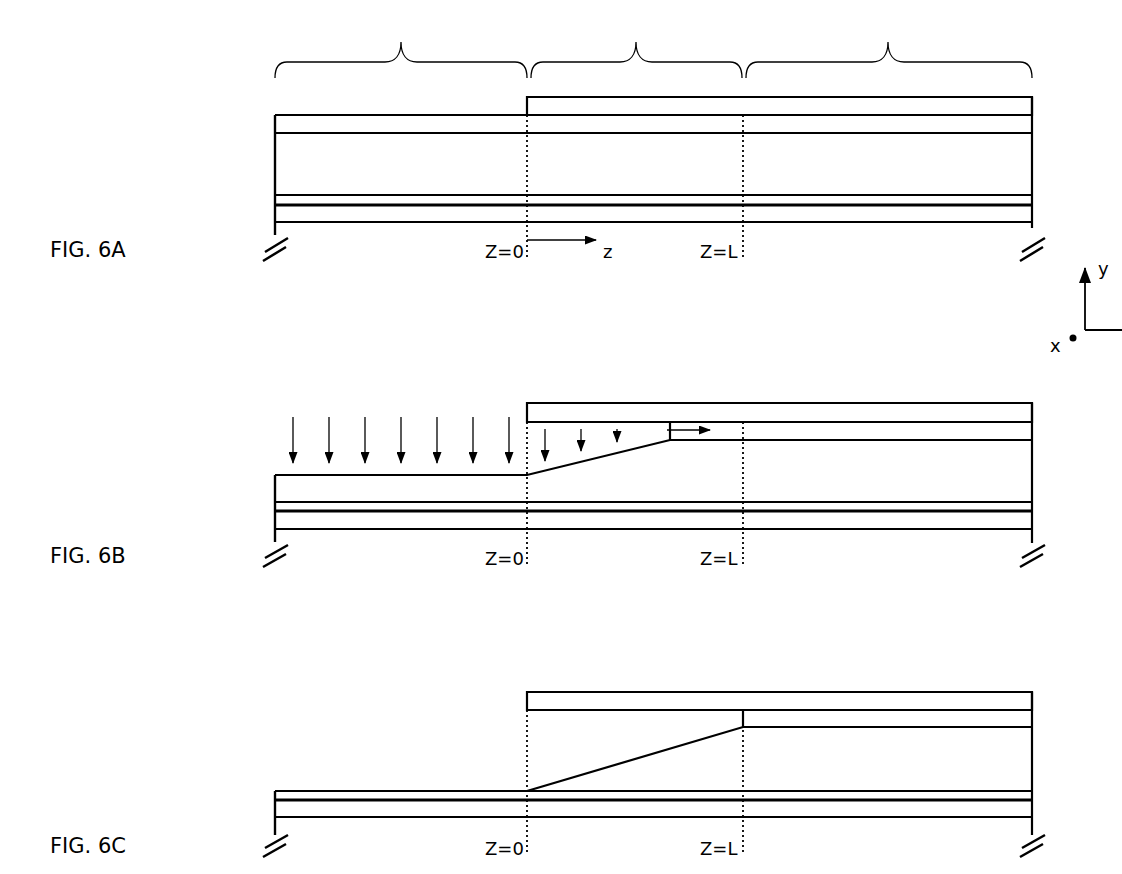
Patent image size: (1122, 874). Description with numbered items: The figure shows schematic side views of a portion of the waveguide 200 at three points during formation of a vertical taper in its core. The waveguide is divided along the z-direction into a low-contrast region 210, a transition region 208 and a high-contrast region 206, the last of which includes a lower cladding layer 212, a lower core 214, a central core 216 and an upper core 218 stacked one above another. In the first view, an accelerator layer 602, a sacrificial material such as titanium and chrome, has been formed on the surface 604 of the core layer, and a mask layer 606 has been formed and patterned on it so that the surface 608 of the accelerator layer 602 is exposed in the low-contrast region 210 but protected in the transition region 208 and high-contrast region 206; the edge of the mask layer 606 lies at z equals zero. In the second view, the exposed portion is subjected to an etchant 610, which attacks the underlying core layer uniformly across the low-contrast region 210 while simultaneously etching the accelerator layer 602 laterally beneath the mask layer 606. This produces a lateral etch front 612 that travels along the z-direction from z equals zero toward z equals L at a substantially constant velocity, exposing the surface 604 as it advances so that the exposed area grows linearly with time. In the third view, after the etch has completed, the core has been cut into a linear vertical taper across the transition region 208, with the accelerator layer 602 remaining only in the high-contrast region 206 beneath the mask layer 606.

In FIG. 6A, the waveguide 200 is at (180, 113).
In FIG. 6B, the waveguide 200 is at (180, 419).
In FIG. 6C, the waveguide 200 is at (180, 708).
In FIG. 6A, the high-contrast region 206 is at (889, 46).
In FIG. 6A, the transition region 208 is at (636, 46).
In FIG. 6A, the low-contrast region 210 is at (401, 46).
In FIG. 6A, the lower cladding layer 212 is at (1013, 262).
In FIG. 6B, the lower cladding layer 212 is at (1013, 569).
In FIG. 6C, the lower cladding layer 212 is at (1013, 857).
In FIG. 6A, the lower core 214 is at (275, 212).
In FIG. 6B, the lower core 214 is at (275, 520).
In FIG. 6C, the lower core 214 is at (275, 808).
In FIG. 6A, the central core 216 is at (1033, 201).
In FIG. 6B, the central core 216 is at (1033, 507).
In FIG. 6C, the central core 216 is at (1033, 795).
In FIG. 6A, the upper core 218 is at (1013, 186).
In FIG. 6B, the upper core 218 is at (1013, 491).
In FIG. 6C, the upper core 218 is at (1013, 778).
In FIG. 6A, the accelerator layer 602 is at (1033, 122).
In FIG. 6B, the accelerator layer 602 is at (1033, 430).
In FIG. 6C, the accelerator layer 602 is at (1033, 718).
In FIG. 6A, the surface 604 is at (637, 135).
In FIG. 6B, the surface 604 is at (853, 443).
In FIG. 6C, the surface 604 is at (853, 730).
In FIG. 6A, the mask layer 606 is at (1033, 108).
In FIG. 6B, the mask layer 606 is at (1033, 412).
In FIG. 6C, the mask layer 606 is at (1033, 701).
In FIG. 6A, the surface 608 is at (418, 121).
In FIG. 6B, the etchant 610 is at (357, 402).
In FIG. 6B, the lateral etch front 612 is at (656, 431).
In FIG. 6C, the lateral etch front 612 is at (734, 719).